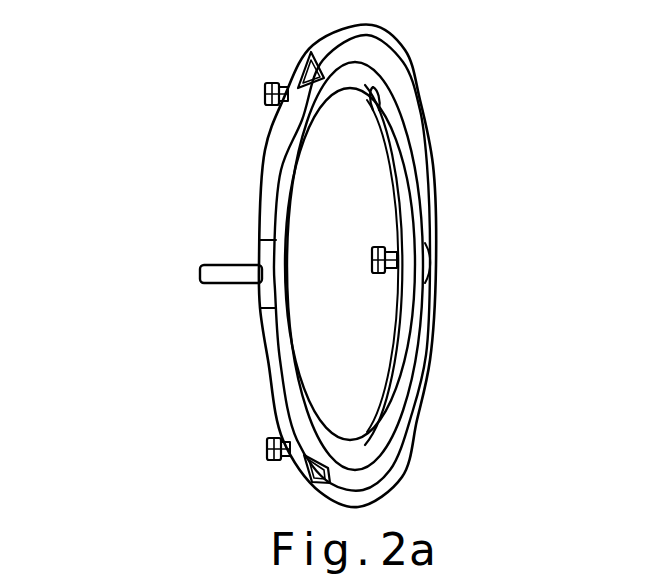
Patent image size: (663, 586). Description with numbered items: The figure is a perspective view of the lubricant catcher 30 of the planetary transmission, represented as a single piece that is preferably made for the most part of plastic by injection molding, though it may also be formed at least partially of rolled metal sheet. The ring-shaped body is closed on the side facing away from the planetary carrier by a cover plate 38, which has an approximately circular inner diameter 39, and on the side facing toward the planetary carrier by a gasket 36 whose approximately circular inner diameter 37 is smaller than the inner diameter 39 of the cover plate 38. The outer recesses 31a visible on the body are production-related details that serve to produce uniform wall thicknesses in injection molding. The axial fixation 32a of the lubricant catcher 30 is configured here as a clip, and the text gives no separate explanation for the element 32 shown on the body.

The lubricant catcher 30 is at (437, 167).
The outer recesses 31a is at (310, 78).
The stub / mounting pin 32 is at (230, 275).
The axial fixation 32a is at (372, 263).
The gasket 36 is at (368, 439).
The inner diameter 37 is at (337, 440).
The cover plate 38 is at (383, 477).
The inner diameter 39 is at (373, 110).